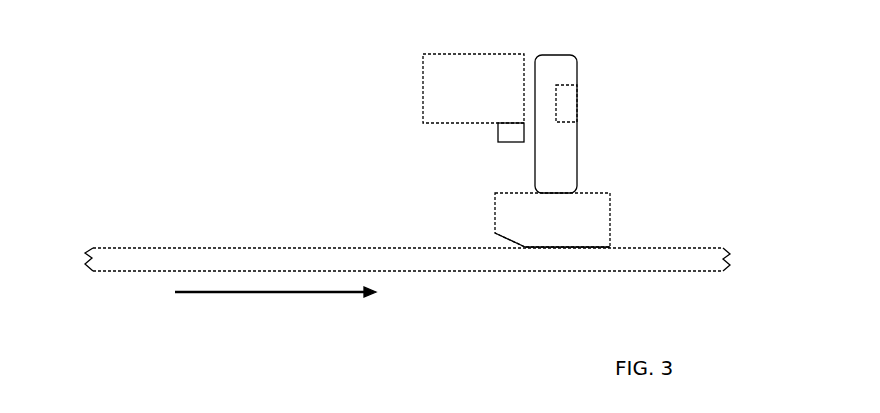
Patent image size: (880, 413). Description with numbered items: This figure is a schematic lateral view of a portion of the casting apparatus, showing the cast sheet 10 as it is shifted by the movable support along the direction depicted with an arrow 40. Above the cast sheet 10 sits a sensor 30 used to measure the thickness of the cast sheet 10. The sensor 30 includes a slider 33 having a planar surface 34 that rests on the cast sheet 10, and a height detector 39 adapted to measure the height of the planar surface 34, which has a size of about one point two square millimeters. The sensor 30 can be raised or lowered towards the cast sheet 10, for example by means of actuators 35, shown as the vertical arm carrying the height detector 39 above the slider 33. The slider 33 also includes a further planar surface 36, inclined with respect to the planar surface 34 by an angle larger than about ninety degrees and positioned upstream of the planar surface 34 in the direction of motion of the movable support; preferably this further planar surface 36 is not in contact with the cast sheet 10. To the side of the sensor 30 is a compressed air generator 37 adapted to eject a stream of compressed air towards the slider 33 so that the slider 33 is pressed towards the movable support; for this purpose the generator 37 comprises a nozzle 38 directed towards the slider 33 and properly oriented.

The cast sheet 10 is at (702, 247).
The sensor 30 is at (646, 204).
The slider 33 is at (508, 218).
The planar surface 34 is at (563, 248).
The actuators 35 is at (580, 174).
The further planar surface 36 is at (495, 233).
The compressed air generator 37 is at (442, 101).
The nozzle 38 is at (497, 140).
The height detector 39 is at (567, 108).
The arrow 40 is at (293, 292).